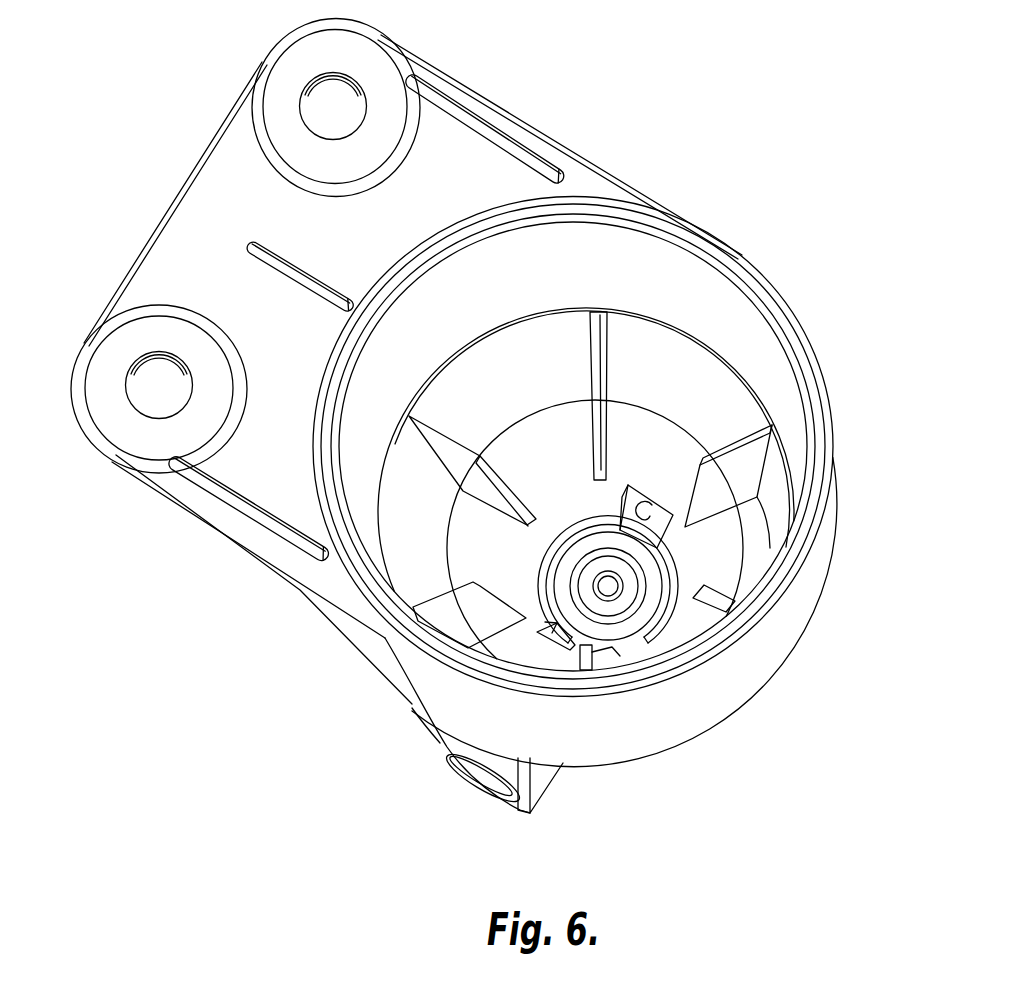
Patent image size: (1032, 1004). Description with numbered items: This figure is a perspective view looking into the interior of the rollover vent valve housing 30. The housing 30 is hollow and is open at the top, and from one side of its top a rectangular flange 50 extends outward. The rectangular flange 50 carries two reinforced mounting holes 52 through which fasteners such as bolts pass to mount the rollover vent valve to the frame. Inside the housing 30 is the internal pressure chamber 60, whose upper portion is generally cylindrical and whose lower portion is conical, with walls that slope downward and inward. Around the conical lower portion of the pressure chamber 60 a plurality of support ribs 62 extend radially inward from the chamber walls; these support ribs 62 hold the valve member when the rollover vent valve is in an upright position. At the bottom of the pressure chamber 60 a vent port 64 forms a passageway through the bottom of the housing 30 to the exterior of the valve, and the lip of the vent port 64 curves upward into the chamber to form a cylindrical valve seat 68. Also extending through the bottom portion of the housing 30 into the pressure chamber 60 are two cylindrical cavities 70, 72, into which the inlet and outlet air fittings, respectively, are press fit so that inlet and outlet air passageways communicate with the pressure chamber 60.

The housing 30 is at (205, 527).
The rectangular flange 50 is at (213, 213).
The reinforced mounting holes 52 is at (330, 126).
The internal pressure chamber 60 is at (660, 290).
The support ribs 62 is at (607, 380).
The vent port 64 is at (609, 591).
The cylindrical valve seat 68 is at (612, 587).
The cylindrical cavity 70 is at (558, 640).
The cylindrical cavity 72 is at (633, 503).